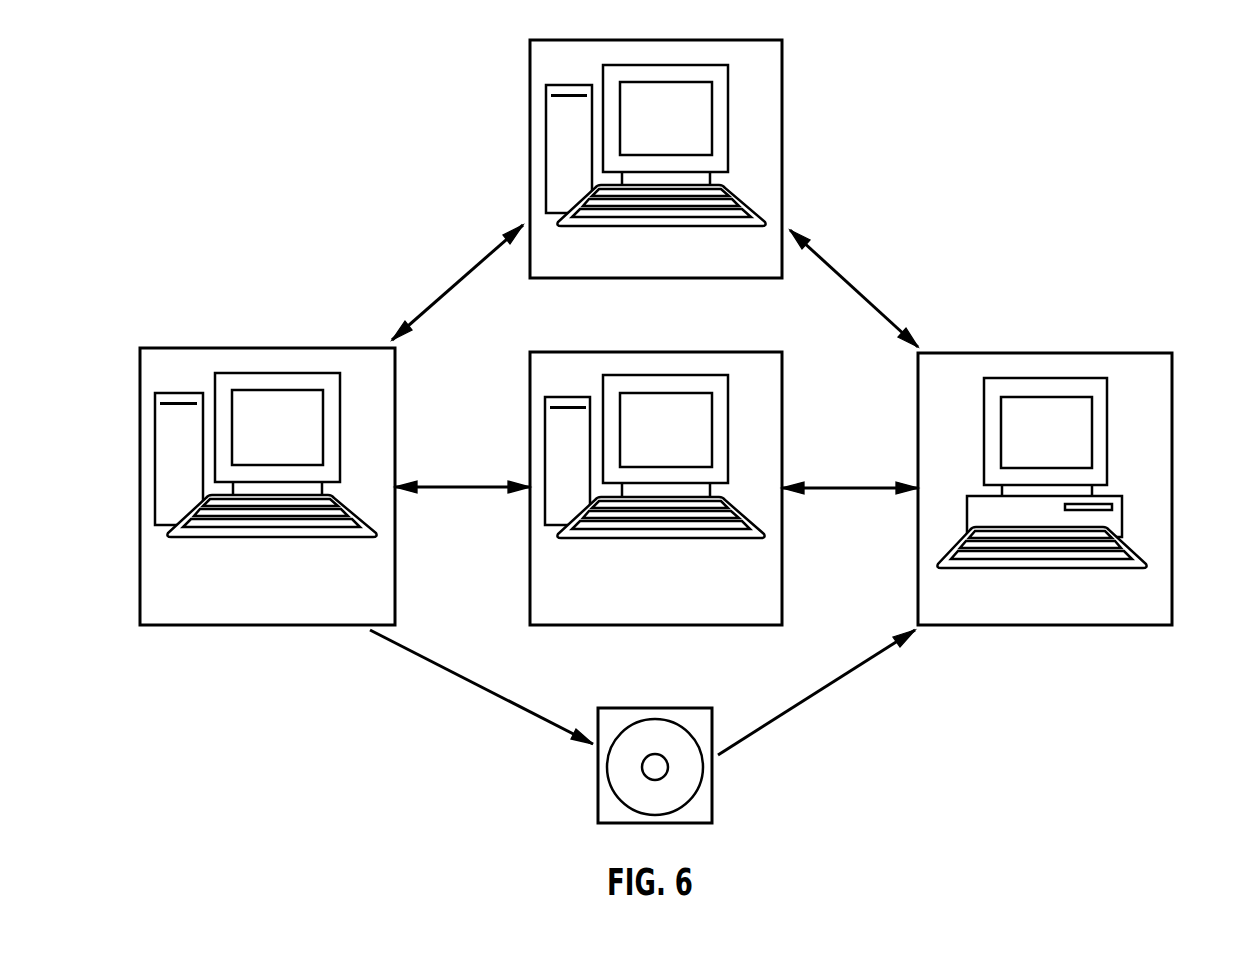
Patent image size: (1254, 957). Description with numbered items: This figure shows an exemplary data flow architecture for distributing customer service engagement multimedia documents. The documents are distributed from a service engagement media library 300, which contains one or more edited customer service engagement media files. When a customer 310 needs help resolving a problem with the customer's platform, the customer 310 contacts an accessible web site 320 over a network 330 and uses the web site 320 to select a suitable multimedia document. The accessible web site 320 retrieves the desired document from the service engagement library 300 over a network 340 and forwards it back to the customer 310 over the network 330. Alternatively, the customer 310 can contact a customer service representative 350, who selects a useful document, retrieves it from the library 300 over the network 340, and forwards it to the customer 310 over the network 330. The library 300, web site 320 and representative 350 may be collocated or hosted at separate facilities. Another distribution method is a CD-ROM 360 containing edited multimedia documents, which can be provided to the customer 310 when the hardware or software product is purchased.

The service engagement media library 300 is at (395, 390).
The customer 310 is at (1172, 392).
The accessible web site 320 is at (782, 110).
The network 330 is at (852, 282).
The network 340 is at (465, 272).
The customer service representative 350 is at (782, 390).
The CD-ROM 360 is at (712, 798).